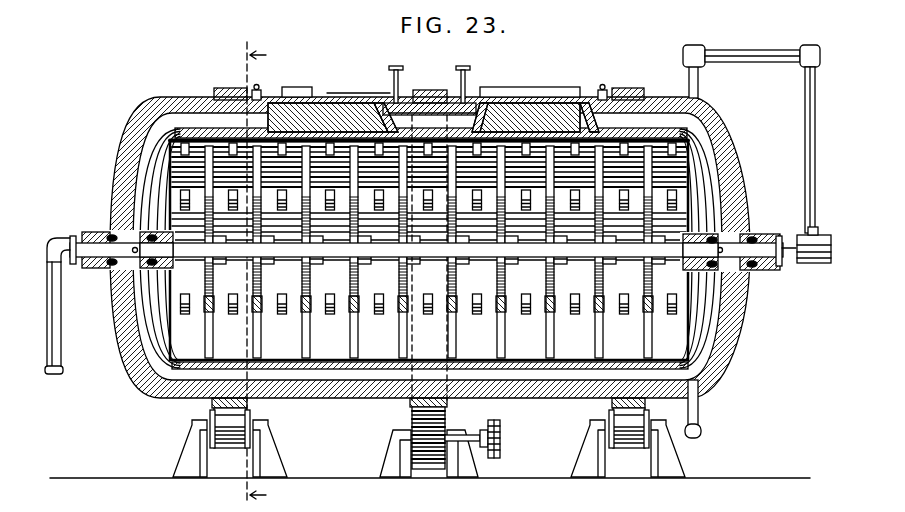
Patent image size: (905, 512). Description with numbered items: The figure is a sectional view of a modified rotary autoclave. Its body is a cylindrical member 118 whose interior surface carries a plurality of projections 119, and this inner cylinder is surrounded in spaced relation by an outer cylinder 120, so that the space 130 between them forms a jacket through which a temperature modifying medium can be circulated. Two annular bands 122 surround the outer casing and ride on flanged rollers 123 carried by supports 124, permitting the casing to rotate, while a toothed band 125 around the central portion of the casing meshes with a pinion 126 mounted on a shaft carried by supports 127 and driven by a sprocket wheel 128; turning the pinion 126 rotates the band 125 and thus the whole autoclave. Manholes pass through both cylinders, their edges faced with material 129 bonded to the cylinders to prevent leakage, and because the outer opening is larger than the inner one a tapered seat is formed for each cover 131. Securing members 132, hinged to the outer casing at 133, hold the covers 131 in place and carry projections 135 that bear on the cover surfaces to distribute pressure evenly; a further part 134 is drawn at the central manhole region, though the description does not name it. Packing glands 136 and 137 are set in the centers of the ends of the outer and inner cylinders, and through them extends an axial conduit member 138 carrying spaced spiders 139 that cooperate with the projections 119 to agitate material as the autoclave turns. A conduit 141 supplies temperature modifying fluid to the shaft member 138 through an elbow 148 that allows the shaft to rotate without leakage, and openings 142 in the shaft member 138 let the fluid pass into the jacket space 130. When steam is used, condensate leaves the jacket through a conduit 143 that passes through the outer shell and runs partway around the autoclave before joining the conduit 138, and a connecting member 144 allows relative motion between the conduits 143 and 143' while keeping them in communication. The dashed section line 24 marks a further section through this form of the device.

The section line 24- 24 is at (347, 274).
The cylindrical member 118 is at (697, 96).
The projections 119 is at (690, 150).
The cylinder 120 is at (705, 135).
The annular bands 122 is at (227, 88).
The flanged rollers 123 is at (211, 412).
The supports 124 is at (187, 453).
The band 125 is at (436, 102).
The pinion 126 is at (411, 421).
The supports 127 is at (392, 456).
The sprocket wheel 128 is at (498, 440).
The facing material 129 is at (483, 110).
The space 130 is at (705, 112).
The cover 131 is at (297, 100).
The securing members 132 is at (340, 100).
The hinge connection 133 is at (260, 89).
The door block 134 is at (400, 100).
The projections 135 is at (392, 88).
The packing gland 136 is at (100, 228).
The packing gland 137 is at (145, 280).
The conduit member 138 is at (332, 265).
The spiders 139 is at (258, 303).
The conduit 141 is at (63, 350).
The openings 142 is at (712, 175).
The conduit 143 is at (751, 232).
The conduit 143' is at (798, 226).
The connecting member 144 is at (812, 265).
The elbow 148 is at (55, 240).